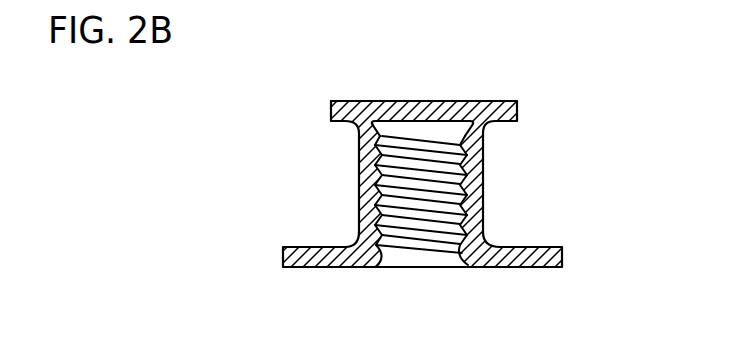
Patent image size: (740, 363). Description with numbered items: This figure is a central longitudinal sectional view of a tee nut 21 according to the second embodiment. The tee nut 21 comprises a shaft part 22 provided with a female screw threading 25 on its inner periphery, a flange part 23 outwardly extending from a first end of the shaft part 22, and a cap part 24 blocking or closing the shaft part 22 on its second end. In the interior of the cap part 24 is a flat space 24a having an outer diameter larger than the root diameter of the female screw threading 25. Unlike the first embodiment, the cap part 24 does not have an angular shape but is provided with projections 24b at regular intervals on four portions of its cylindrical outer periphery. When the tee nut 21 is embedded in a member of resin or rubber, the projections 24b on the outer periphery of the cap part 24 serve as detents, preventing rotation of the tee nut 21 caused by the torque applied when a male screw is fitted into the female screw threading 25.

The tee nut 21 is at (422, 179).
The shaft part 22 is at (485, 180).
The flange part 23 is at (505, 262).
The cap part 24 is at (478, 100).
The flat space 24a is at (414, 122).
The projections 24b is at (334, 111).
The female screw threading 25 is at (362, 200).